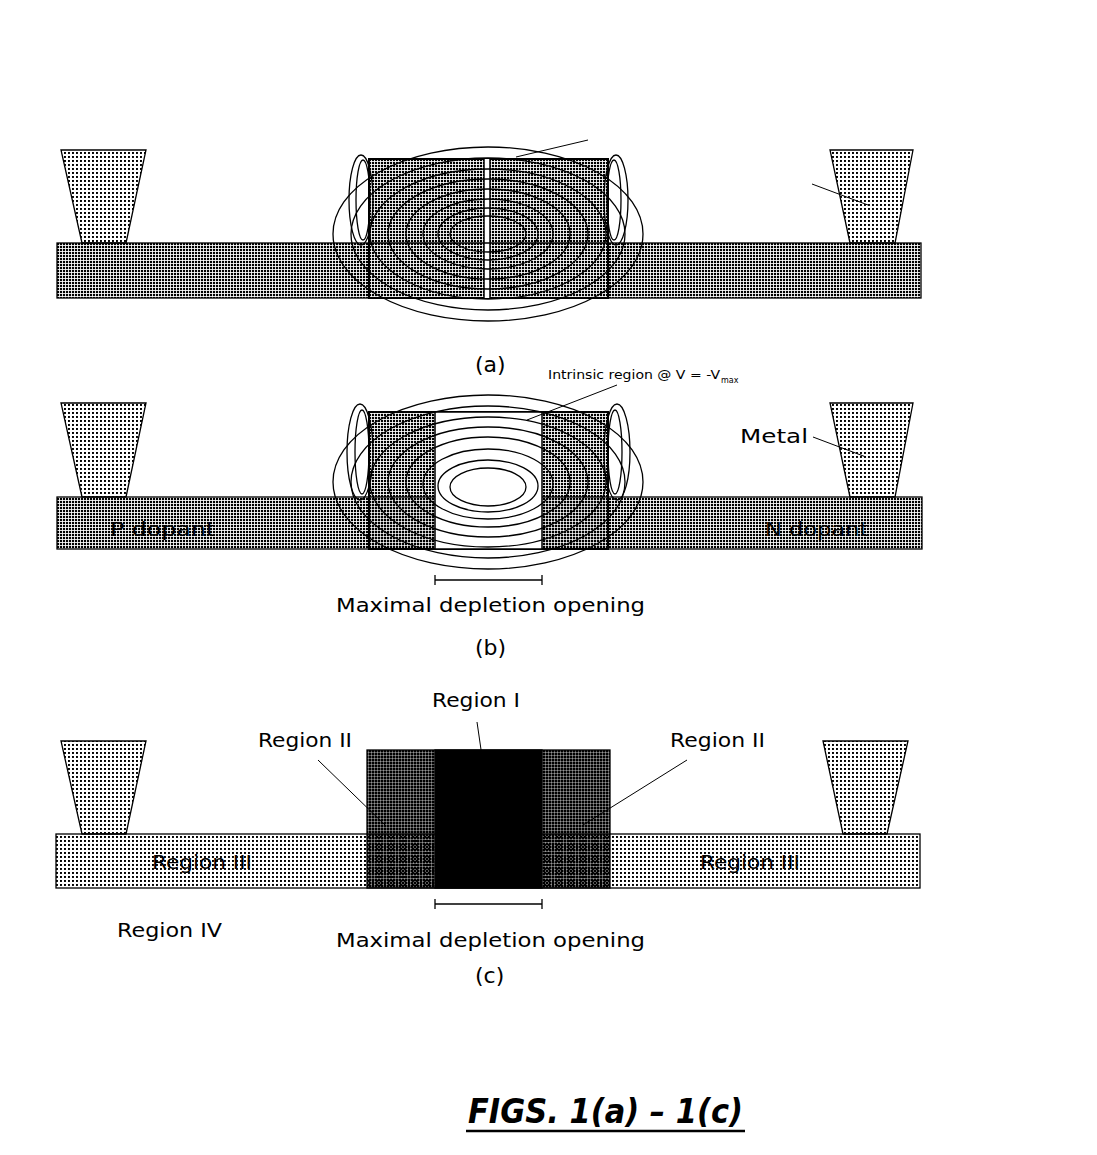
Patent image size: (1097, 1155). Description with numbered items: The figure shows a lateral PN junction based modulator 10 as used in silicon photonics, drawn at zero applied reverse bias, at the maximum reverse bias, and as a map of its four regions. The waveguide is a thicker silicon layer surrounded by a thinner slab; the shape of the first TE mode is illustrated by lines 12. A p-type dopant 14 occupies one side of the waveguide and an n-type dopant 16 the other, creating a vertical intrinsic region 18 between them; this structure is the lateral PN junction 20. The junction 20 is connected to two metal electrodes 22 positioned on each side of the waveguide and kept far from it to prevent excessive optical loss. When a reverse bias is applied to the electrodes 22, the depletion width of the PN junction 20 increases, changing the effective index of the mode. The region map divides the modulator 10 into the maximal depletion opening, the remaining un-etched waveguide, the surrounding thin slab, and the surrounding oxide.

The lateral PN junction based modulator 10 is at (516, 162).
The lines 12 is at (492, 148).
The p-type dopant 14 is at (200, 209).
The n-type dopant 16 is at (907, 226).
The vertical intrinsic region 18 is at (592, 121).
The lateral PN junction 20 is at (617, 191).
The metal electrodes 22 is at (125, 148).